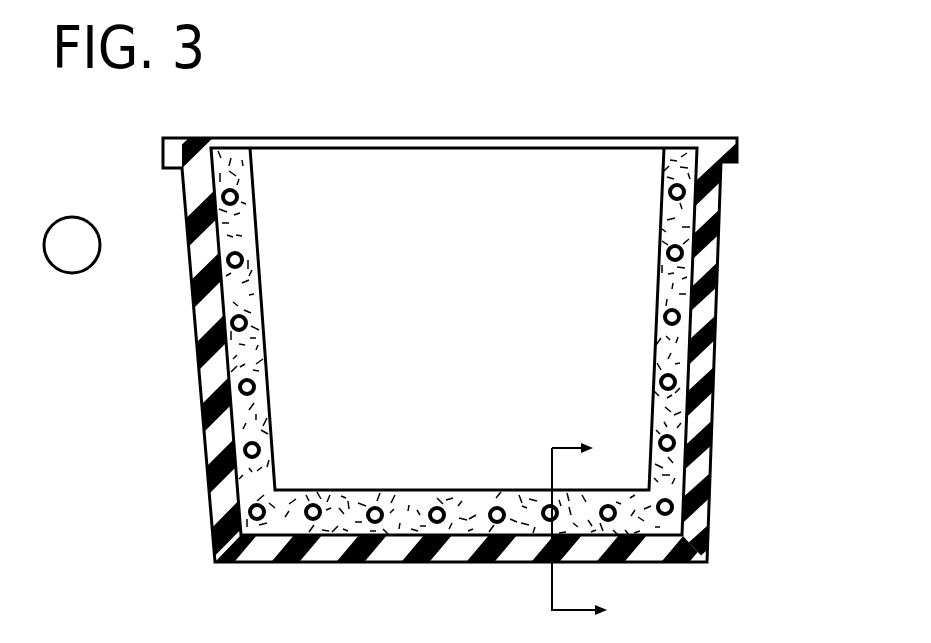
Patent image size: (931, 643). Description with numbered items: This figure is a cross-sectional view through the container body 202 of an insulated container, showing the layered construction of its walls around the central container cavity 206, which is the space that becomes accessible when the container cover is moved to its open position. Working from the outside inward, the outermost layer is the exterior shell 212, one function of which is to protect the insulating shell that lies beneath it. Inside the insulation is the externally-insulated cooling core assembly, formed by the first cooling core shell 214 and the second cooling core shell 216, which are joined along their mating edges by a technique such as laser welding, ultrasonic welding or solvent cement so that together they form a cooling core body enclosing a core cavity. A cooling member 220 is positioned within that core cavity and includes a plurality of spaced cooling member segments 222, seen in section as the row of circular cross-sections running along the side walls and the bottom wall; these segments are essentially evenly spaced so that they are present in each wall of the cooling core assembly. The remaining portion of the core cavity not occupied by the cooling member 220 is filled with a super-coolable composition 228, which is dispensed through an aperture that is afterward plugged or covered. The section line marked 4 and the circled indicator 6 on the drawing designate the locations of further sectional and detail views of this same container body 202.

The container body 202 is at (460, 312).
The container cavity 206 is at (541, 181).
The exterior shell 212 is at (207, 460).
The first cooling core shell 214 is at (268, 395).
The second cooling core shell 216 is at (233, 372).
The cooling member 220 is at (693, 303).
The spaced cooling member segments 222 is at (230, 325).
The super-coolable composition 228 is at (672, 236).
The section line 4- 4 is at (597, 520).
The view indicator 6 is at (160, 189).